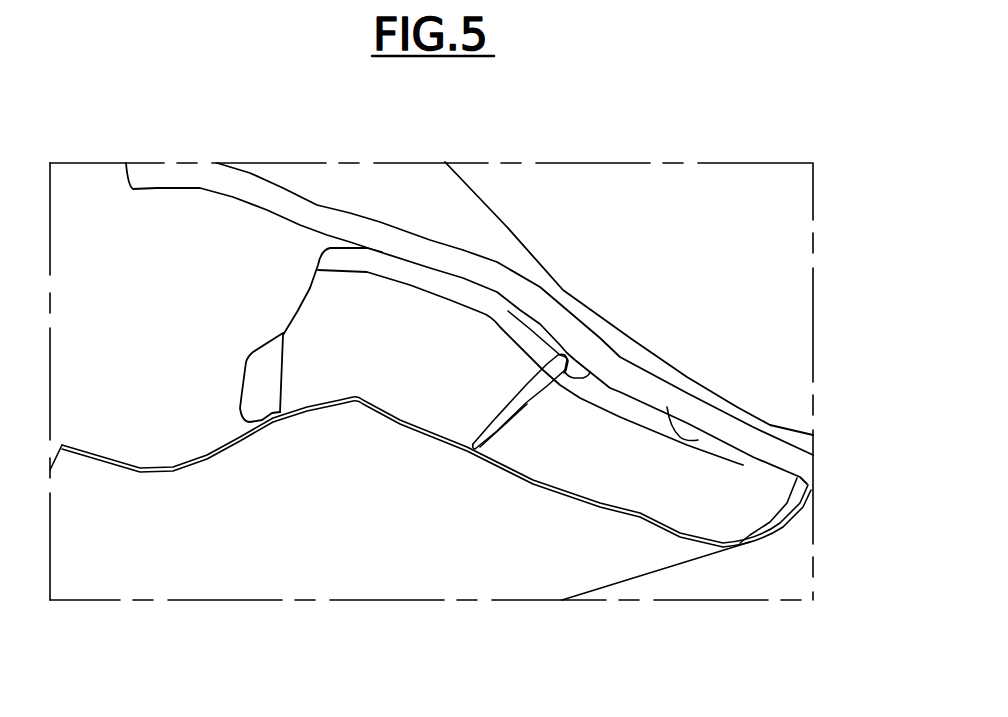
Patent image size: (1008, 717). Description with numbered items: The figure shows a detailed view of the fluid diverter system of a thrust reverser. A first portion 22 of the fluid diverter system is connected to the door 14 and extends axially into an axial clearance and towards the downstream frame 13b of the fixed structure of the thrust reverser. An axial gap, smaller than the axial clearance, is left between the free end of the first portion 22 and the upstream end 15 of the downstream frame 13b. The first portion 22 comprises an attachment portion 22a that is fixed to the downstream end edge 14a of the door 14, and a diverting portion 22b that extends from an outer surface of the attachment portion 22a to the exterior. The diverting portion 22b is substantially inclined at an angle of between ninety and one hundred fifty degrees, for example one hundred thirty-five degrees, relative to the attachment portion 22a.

The downstream frame 13b is at (772, 303).
The upstream end 15 is at (698, 440).
The diverting portion 22b is at (532, 387).
The first portion 22 is at (512, 442).
The attachment portion 22a is at (537, 413).
The door 14 is at (422, 532).
The downstream end edge 14a is at (655, 505).